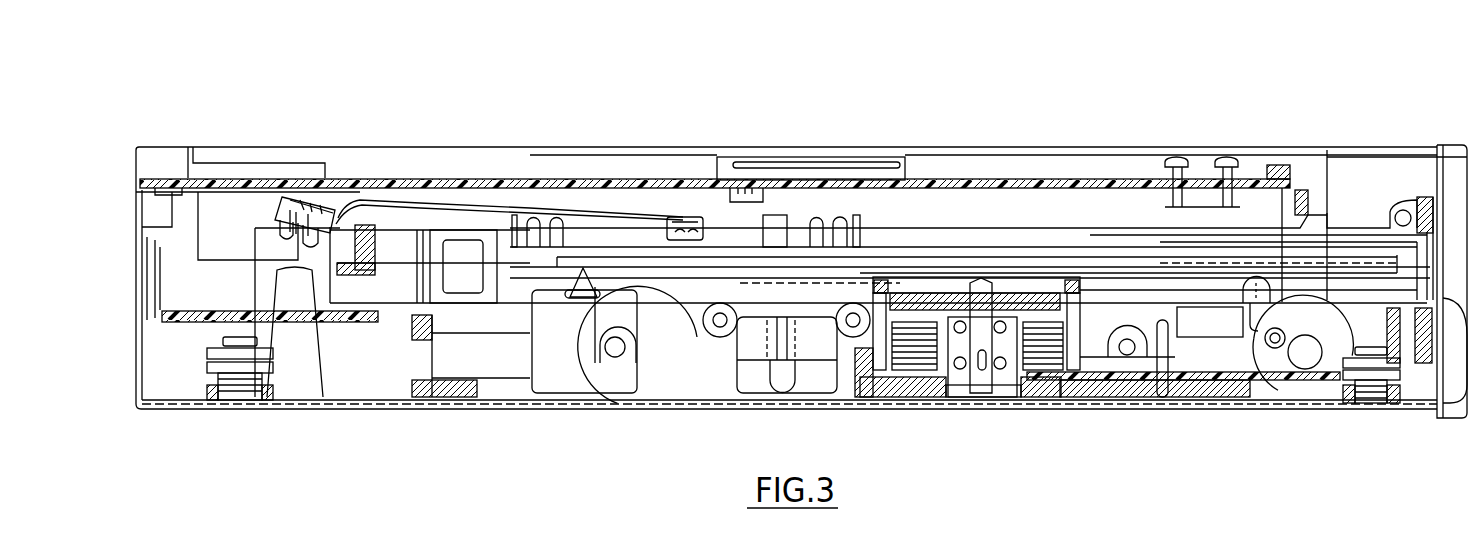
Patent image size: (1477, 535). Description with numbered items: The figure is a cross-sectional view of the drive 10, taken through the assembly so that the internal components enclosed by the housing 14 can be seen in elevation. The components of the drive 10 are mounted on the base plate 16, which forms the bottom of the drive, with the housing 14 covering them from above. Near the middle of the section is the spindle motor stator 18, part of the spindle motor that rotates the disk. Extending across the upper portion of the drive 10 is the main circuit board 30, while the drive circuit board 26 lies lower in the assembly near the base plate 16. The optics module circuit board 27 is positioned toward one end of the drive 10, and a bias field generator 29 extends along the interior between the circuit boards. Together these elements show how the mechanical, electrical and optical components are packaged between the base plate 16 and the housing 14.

The drive 10 is at (885, 66).
The housing 14 is at (1368, 150).
The base plate 16 is at (722, 409).
The spindle motor stator 18 is at (1053, 372).
The drive circuit board 26 is at (1213, 379).
The optics module circuit board 27 is at (300, 312).
The bias field generator 29 is at (640, 256).
The main circuit board 30 is at (1117, 186).